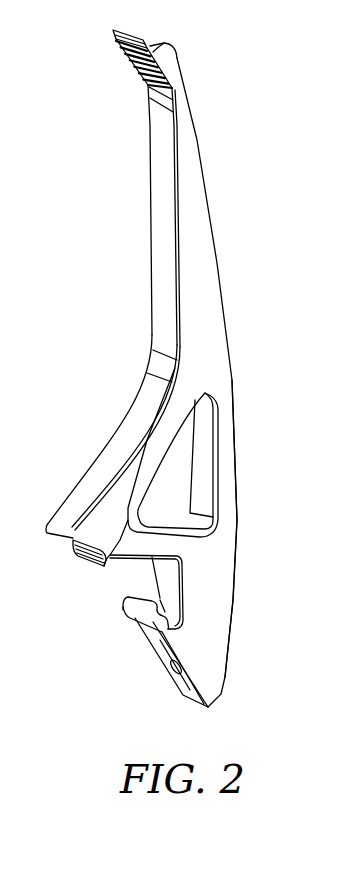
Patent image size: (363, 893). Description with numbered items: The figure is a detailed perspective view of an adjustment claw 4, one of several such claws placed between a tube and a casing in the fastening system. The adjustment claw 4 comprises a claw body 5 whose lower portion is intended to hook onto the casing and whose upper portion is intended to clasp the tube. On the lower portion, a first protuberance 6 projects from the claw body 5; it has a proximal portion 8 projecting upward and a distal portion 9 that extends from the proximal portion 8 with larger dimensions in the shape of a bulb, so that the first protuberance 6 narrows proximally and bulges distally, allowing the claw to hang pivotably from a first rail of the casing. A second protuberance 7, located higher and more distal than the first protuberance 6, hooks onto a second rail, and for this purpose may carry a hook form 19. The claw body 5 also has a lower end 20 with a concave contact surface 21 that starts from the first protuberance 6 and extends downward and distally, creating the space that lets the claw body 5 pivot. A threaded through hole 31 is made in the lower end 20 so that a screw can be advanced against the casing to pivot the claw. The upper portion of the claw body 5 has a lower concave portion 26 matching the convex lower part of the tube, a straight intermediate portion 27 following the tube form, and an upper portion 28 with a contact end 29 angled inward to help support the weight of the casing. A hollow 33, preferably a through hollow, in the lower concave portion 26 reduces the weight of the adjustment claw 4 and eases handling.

The adjustment claw 4 is at (235, 289).
The claw body 5 is at (243, 418).
The first protuberance 6 is at (122, 613).
The second protuberance 7 is at (112, 560).
The proximal portion 8 is at (157, 642).
The distal portion 9 is at (137, 607).
The hook form 19 is at (80, 560).
The lower end 20 is at (220, 612).
The contact surface 21 is at (163, 653).
The lower concave portion 26 is at (130, 433).
The intermediate portion 27 is at (160, 262).
The upper portion 28 is at (131, 70).
The contact end 29 is at (160, 49).
The threaded through hole 31 is at (170, 667).
The hollow 33 is at (177, 465).